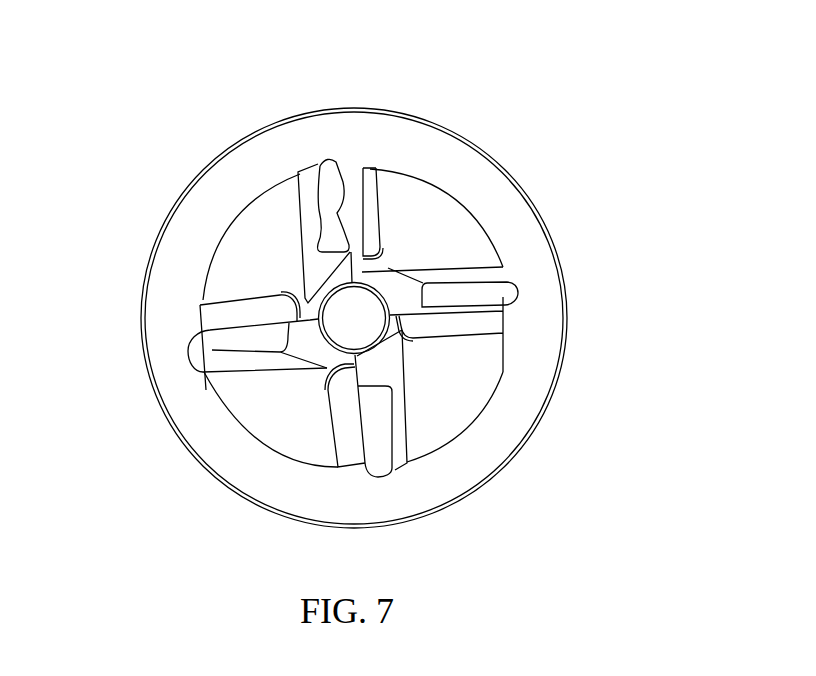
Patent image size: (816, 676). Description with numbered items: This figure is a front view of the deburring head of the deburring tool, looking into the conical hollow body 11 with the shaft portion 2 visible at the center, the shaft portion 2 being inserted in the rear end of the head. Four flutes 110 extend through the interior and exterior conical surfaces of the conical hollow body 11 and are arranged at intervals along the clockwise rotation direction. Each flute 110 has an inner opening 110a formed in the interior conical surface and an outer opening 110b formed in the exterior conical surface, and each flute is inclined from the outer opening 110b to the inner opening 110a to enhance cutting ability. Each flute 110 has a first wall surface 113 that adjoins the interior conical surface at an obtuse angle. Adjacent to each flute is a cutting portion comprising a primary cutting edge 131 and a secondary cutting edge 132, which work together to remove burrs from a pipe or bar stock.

The shaft portion 2 is at (337, 307).
The conical hollow body 11 is at (467, 138).
The flutes 110 is at (366, 306).
The inner opening 110a is at (343, 182).
The outer opening 110b is at (318, 181).
The first wall surface 113 is at (447, 273).
The primary cutting edge 131 is at (444, 310).
The secondary cutting edge 132 is at (463, 335).